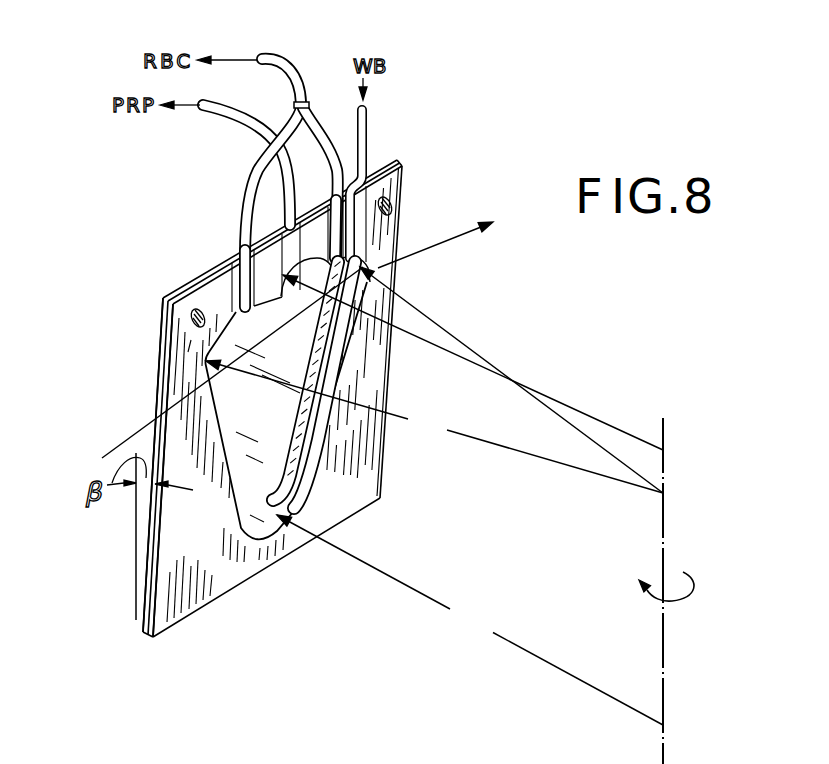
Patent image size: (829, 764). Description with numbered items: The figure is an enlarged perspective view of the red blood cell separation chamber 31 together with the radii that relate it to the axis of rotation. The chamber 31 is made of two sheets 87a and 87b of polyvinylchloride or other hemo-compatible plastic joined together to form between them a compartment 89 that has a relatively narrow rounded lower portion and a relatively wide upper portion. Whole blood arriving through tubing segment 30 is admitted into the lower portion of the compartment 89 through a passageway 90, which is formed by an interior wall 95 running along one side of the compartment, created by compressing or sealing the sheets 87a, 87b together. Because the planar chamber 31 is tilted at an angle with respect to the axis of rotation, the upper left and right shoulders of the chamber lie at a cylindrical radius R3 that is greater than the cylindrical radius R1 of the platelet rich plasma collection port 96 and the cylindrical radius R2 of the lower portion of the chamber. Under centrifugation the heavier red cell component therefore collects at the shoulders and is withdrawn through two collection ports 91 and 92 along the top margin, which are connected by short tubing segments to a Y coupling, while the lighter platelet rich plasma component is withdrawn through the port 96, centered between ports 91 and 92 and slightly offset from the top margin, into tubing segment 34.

The tubing segment 30 is at (366, 132).
The red blood cell separation chamber 31 is at (191, 507).
The tubing segment 34 is at (284, 203).
The sheet 87a is at (160, 383).
The sheet 87b is at (168, 431).
The compartment 89 is at (277, 419).
The passageway 90 is at (306, 430).
The collection port 91 is at (208, 288).
The collection port 92 is at (342, 218).
The interior wall 95 is at (291, 473).
The port 96 is at (262, 235).
The cylindrical radius of the PRP collection port R1 is at (511, 380).
The cylindrical radius of the lower portion of the chamber R2 is at (470, 620).
The cylindrical radius of the collection regions R3 is at (434, 384).